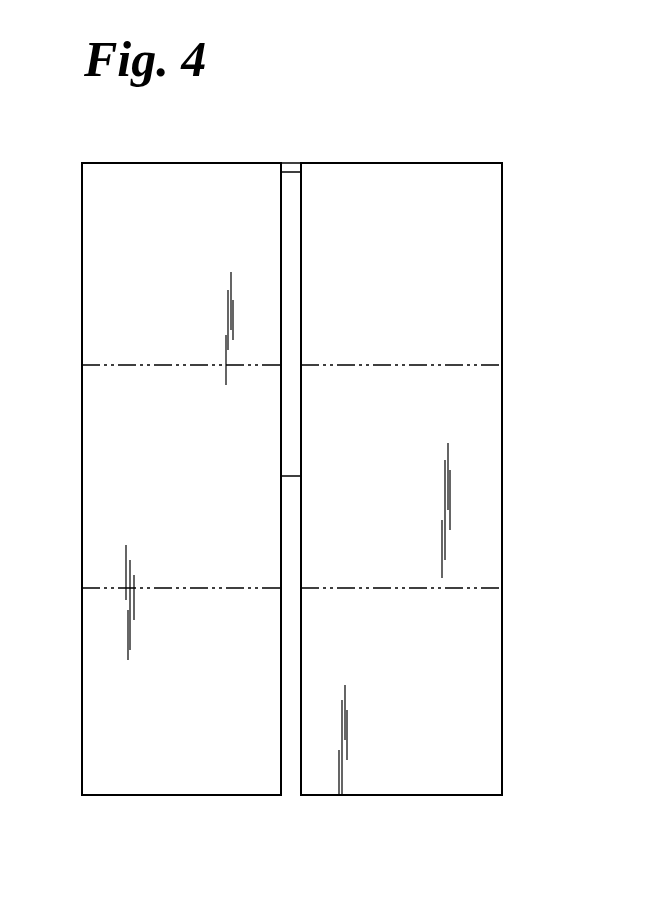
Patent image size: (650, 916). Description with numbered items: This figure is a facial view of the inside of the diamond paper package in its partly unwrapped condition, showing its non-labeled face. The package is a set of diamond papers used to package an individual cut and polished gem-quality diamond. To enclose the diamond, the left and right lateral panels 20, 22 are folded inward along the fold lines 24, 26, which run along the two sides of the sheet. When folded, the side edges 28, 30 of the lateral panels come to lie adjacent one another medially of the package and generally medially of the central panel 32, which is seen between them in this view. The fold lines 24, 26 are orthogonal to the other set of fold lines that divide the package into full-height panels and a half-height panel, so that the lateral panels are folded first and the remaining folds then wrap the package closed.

The left lateral panel 20 is at (420, 478).
The right lateral panel 22 is at (198, 478).
The fold line 24 is at (503, 412).
The fold line 26 is at (82, 412).
The side edge 28 is at (298, 423).
The side edge 30 is at (283, 501).
The central panel 32 is at (290, 182).